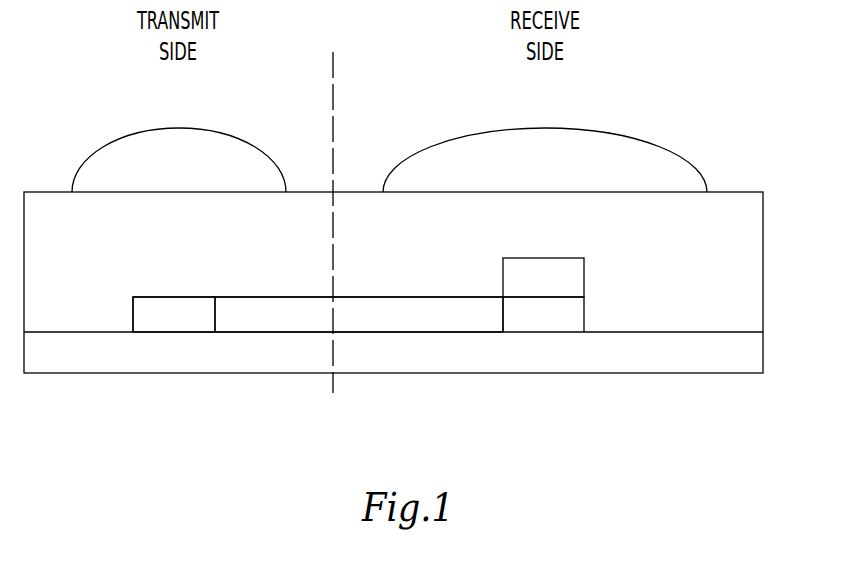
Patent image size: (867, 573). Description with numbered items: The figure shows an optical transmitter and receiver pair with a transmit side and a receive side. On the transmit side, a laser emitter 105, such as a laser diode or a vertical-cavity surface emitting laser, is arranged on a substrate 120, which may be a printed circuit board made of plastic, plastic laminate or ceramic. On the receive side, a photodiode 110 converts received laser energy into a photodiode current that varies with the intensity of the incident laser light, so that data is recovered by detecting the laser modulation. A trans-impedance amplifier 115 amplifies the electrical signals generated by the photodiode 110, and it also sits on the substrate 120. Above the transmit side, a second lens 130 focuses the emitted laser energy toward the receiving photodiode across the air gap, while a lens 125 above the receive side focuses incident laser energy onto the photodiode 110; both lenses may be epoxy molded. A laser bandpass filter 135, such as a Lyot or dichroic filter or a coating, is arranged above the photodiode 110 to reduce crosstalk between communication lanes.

The laser emitter 105 is at (163, 321).
The photodiode 110 is at (584, 313).
The trans-impedance amplifier 115 is at (278, 320).
The substrate 120 is at (393, 347).
The lens 125 is at (546, 133).
The second lens 130 is at (180, 133).
The laser bandpass filter 135 is at (584, 279).